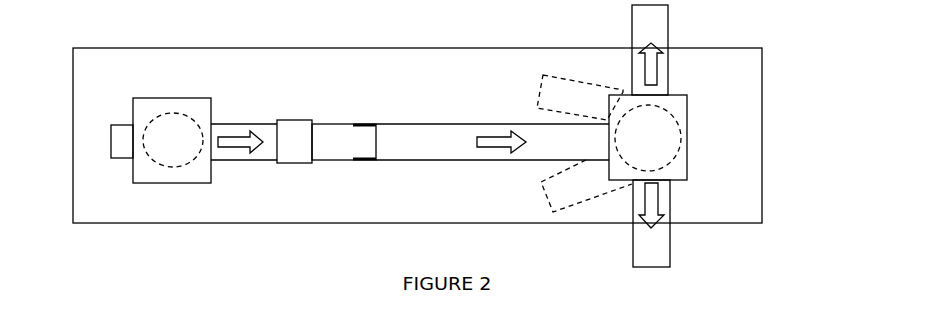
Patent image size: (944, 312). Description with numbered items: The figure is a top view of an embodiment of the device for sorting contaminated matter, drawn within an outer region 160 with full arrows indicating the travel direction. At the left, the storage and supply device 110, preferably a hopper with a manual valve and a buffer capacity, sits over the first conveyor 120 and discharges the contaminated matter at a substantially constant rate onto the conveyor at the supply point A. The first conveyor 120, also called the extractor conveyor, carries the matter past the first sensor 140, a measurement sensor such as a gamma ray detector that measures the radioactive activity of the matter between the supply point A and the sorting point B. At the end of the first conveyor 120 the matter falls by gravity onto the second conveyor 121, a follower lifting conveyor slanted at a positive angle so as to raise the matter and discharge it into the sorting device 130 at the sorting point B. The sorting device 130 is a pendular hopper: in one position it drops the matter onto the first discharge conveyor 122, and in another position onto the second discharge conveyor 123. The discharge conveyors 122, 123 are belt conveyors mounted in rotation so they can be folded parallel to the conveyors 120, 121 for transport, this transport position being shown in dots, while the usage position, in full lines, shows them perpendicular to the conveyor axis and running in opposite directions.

The storage and supply device 110 is at (214, 96).
The first conveyor 120 is at (358, 152).
The second conveyor 121 is at (453, 152).
The first discharge conveyor 122 is at (665, 35).
The second discharge conveyor 123 is at (670, 250).
The sorting device 130 is at (692, 93).
The first sensor 140 is at (281, 152).
The substrate 160 is at (712, 203).
The supply point A is at (173, 172).
The sorting point B is at (682, 125).